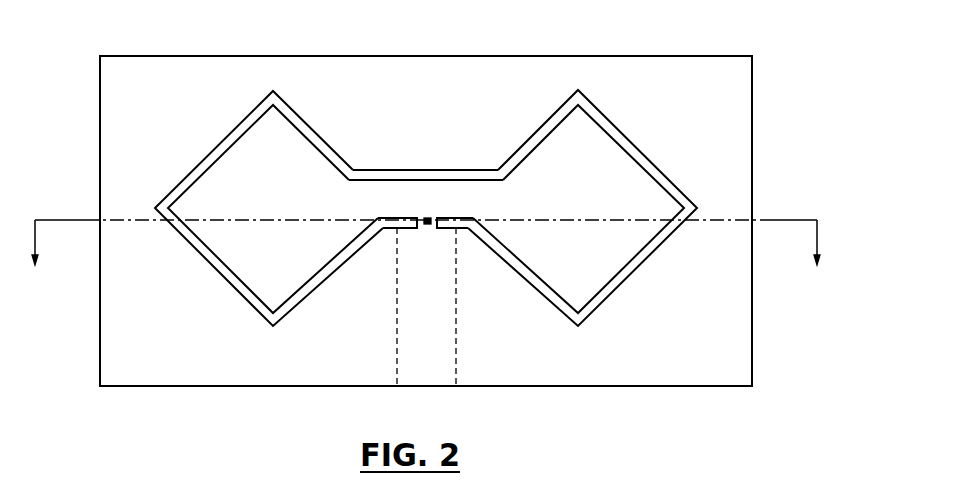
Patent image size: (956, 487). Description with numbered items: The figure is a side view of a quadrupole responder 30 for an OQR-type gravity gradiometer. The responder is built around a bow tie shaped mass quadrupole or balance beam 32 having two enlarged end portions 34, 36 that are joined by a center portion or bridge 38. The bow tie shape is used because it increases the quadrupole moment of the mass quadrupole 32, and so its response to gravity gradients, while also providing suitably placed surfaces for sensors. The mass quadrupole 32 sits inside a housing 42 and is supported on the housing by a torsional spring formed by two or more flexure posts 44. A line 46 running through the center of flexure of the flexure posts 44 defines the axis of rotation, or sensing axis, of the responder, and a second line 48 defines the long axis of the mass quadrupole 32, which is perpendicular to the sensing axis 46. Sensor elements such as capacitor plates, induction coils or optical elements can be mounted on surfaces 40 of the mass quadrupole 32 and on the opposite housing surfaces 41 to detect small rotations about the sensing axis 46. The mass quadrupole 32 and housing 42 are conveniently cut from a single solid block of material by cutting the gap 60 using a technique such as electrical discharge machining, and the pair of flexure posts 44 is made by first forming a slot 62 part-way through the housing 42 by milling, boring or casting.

The quadrupole responder 30 is at (787, 90).
The mass quadrupole 32 is at (294, 146).
The enlarged end portion 34 is at (247, 147).
The enlarged end portion 36 is at (605, 157).
The bridge 38 is at (430, 180).
The surfaces of the mass quadrupole 40 is at (195, 170).
The housing surfaces 41 is at (168, 197).
The housing 42 is at (117, 364).
The flexure posts 44 is at (427, 217).
The sensing axis 46 is at (427, 224).
The long axis of the mass quadrupole 48 is at (722, 222).
The gap 60 is at (318, 282).
The slot 62 is at (438, 328).